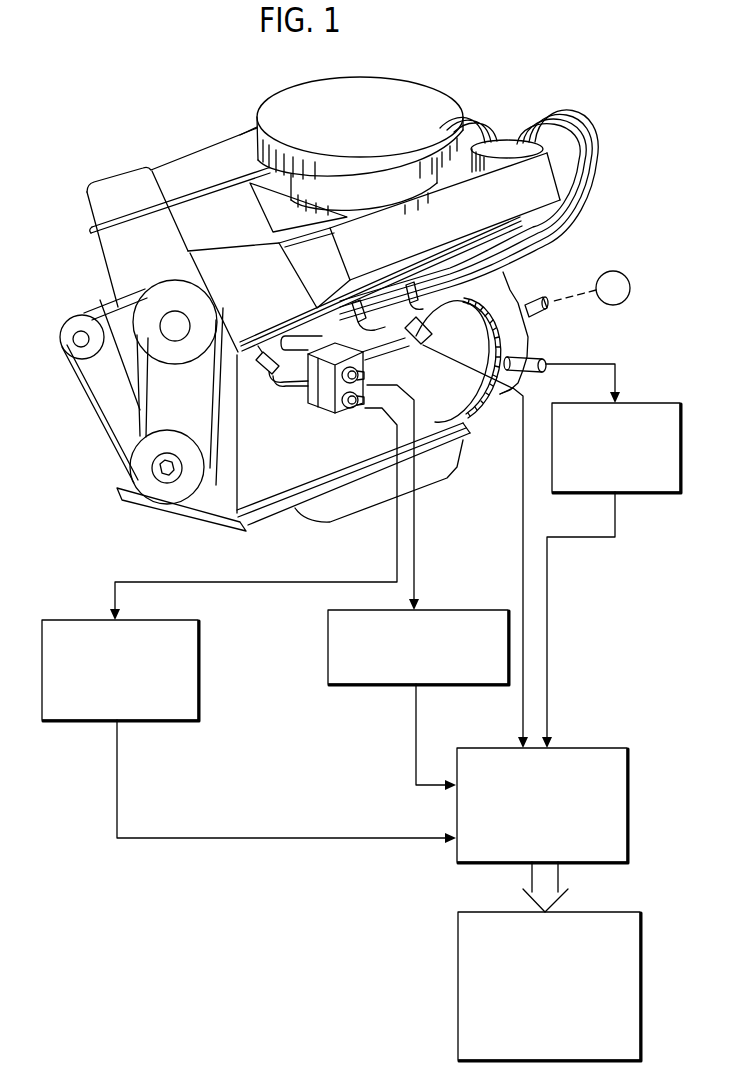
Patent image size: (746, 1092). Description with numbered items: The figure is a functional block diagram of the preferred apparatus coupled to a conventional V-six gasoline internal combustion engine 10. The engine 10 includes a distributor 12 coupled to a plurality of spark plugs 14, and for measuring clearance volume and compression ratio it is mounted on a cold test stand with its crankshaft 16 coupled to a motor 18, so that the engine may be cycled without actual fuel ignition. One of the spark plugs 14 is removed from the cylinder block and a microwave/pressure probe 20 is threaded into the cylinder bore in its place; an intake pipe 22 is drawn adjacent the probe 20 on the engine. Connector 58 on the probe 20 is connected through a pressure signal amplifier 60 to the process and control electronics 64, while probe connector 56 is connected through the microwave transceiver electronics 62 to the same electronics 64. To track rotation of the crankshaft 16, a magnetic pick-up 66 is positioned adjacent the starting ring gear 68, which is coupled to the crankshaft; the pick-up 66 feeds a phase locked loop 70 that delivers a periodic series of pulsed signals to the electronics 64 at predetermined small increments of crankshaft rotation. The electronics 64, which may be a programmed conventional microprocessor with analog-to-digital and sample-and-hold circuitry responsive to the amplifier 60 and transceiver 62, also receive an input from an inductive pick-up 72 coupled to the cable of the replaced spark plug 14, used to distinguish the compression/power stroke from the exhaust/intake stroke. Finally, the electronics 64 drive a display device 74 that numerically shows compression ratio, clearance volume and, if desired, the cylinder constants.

The internal combustion engine 10 is at (540, 84).
The distributor 12 is at (515, 108).
The spark plugs 14 is at (270, 382).
The crankshaft 16 is at (540, 300).
The motor 18 is at (632, 280).
The microwave/pressure probe 20 is at (316, 414).
The intake pipe 22 is at (303, 332).
The probe connector 56 is at (369, 379).
The connector 58 is at (352, 410).
The pressure signal amplifier 60 is at (80, 719).
The microwave transceiver electronics 62 is at (373, 608).
The process and control electronics 64 is at (610, 747).
The magnetic pick-up 66 is at (546, 355).
The starting ring gear 68 is at (494, 413).
The phase locked loop 70 is at (653, 403).
The inductive pick-up 72 is at (422, 346).
The display device 74 is at (641, 927).